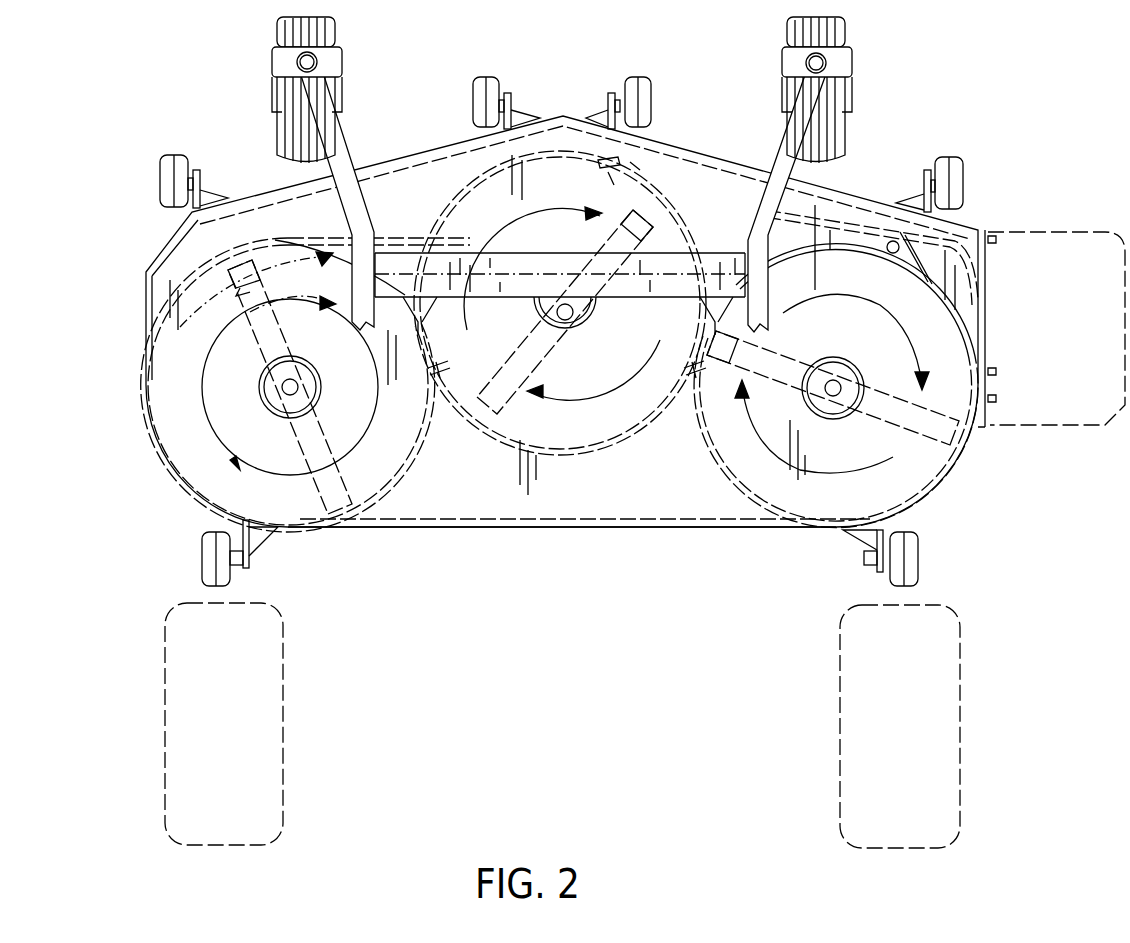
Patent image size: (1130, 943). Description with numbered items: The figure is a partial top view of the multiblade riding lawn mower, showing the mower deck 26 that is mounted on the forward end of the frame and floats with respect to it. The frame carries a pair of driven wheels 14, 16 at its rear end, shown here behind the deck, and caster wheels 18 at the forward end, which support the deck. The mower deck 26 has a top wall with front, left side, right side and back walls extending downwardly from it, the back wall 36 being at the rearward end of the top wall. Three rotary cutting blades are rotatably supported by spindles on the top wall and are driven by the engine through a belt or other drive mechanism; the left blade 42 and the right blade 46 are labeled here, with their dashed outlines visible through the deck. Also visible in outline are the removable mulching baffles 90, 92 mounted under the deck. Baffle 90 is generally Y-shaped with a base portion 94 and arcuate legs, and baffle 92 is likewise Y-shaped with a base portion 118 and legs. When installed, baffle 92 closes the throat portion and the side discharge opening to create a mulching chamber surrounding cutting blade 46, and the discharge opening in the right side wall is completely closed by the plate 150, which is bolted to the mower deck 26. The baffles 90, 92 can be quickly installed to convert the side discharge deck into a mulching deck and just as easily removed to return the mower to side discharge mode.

The driven wheel 14 is at (950, 672).
The driven wheel 16 is at (273, 677).
The caster wheel 18 is at (342, 60).
The mower deck 26 is at (684, 140).
The back wall 36 is at (627, 530).
The rotary cutting blade 42 is at (366, 520).
The rotary cutting blade 46 is at (965, 447).
The mulching baffle 90 is at (249, 296).
The mulching baffle 92 is at (846, 253).
The base portion 94 is at (388, 345).
The base portion 118 is at (650, 332).
The plate 150 is at (990, 283).